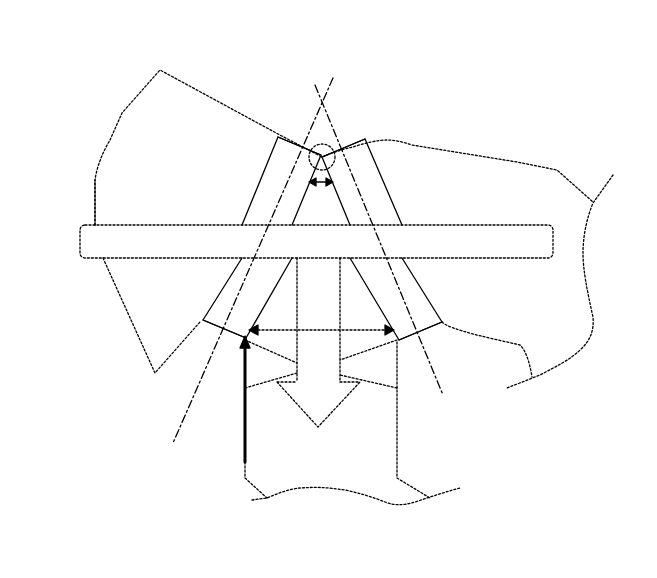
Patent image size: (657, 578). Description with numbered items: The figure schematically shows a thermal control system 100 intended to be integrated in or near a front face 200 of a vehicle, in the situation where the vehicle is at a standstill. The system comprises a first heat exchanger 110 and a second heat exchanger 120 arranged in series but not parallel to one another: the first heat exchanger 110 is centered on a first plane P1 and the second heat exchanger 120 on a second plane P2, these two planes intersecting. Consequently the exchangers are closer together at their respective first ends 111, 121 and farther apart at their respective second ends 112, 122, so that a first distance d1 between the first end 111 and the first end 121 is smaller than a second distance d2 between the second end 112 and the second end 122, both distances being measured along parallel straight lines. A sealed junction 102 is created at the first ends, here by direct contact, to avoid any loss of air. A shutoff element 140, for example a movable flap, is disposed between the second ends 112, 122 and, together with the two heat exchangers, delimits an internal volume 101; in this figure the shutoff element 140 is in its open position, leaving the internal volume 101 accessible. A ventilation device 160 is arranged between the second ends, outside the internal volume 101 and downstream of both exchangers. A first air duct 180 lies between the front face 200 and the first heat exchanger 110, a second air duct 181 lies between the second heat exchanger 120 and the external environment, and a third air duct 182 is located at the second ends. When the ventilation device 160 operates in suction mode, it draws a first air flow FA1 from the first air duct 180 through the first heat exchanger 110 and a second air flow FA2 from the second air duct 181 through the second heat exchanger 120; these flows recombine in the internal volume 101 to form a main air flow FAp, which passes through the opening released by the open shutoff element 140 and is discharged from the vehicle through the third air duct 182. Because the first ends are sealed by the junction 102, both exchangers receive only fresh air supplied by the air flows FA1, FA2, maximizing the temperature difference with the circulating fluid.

The thermal control system 100 is at (426, 96).
The internal volume 101 is at (293, 320).
The sealed junction 102 is at (328, 155).
The first heat exchanger 110 is at (201, 301).
The first end of first heat exchanger 111 is at (280, 138).
The second end of first heat exchanger 112 is at (205, 326).
The second heat exchanger 120 is at (406, 347).
The first end of second heat exchanger 121 is at (365, 142).
The second end of second heat exchanger 122 is at (432, 326).
The shutoff element 140 is at (244, 397).
The ventilation device 160 is at (364, 382).
The first air duct 180 is at (151, 145).
The second air duct 181 is at (538, 340).
The third air duct 182 is at (322, 471).
The front face 200 is at (95, 177).
The first plane P1 is at (317, 118).
The second plane P2 is at (330, 117).
The first distance d1 is at (320, 202).
The second distance d2 is at (390, 330).
The first air flow FA1 is at (97, 262).
The second air flow FA2 is at (480, 225).
The main air flow FAp is at (300, 402).